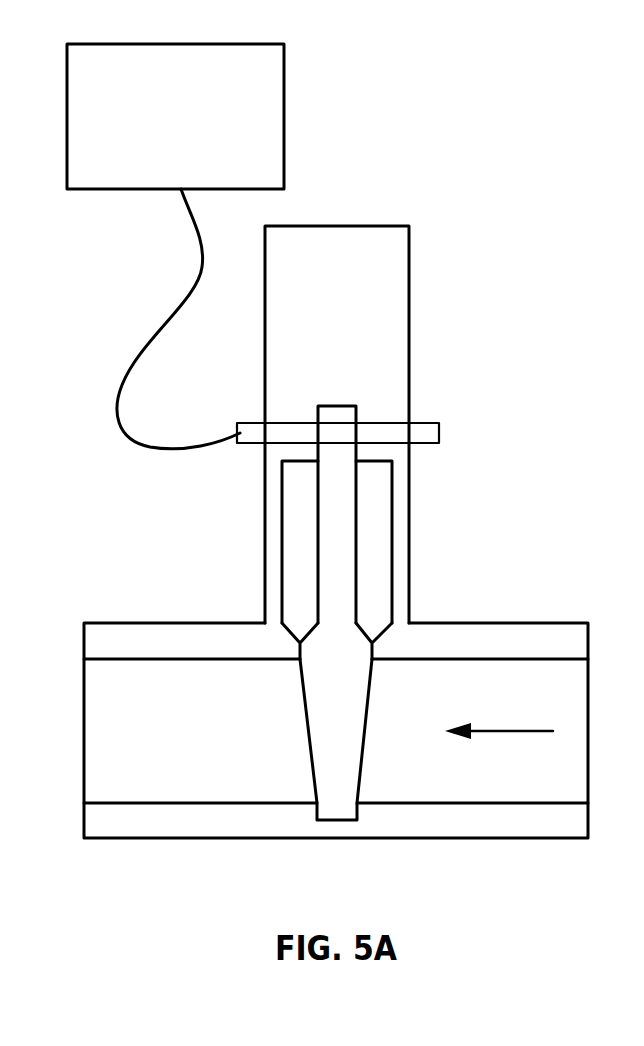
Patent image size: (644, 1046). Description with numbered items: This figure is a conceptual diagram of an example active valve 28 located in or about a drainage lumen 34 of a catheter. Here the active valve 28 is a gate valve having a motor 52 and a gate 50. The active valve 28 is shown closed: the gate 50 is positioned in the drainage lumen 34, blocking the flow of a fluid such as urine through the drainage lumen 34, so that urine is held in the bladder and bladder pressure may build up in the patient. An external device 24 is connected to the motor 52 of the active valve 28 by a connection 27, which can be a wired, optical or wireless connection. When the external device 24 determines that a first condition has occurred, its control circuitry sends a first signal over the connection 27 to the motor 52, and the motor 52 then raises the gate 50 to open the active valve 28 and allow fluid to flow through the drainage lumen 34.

The external device 24 is at (188, 157).
The connection 27 is at (128, 425).
The active valve 28 is at (409, 278).
The motor 52 is at (430, 423).
The gate 50 is at (357, 533).
The drainage lumen 34 is at (183, 780).